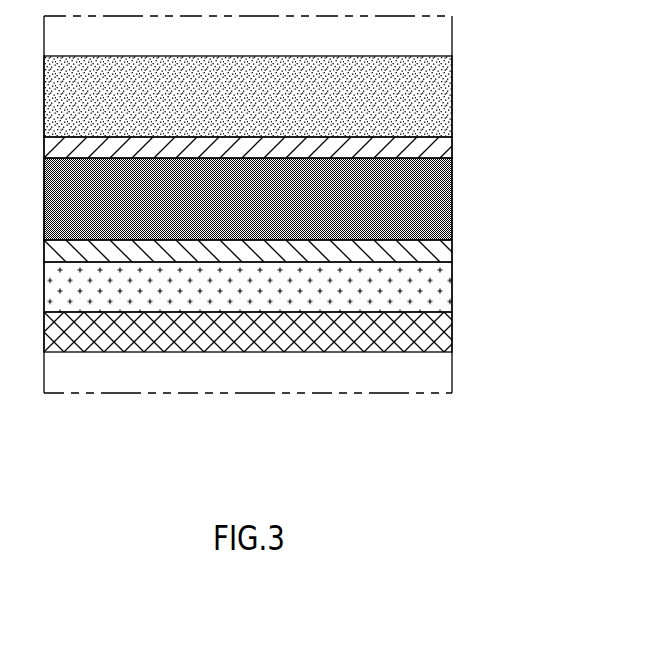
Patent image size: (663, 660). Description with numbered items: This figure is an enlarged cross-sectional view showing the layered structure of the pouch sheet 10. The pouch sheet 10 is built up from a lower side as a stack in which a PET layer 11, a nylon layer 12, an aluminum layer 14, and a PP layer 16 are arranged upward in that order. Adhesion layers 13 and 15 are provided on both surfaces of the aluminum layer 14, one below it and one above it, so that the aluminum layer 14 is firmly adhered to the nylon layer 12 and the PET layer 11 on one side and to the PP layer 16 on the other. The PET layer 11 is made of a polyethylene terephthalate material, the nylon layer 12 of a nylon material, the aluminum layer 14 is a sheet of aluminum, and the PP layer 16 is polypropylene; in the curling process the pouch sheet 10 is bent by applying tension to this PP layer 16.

The pouch sheet 10 is at (530, 97).
The PET layer 11 is at (434, 327).
The nylon layer 12 is at (434, 282).
The adhesion layer 13 is at (434, 248).
The aluminum layer 14 is at (434, 197).
The adhesion layer 15 is at (434, 151).
The PP layer 16 is at (434, 98).